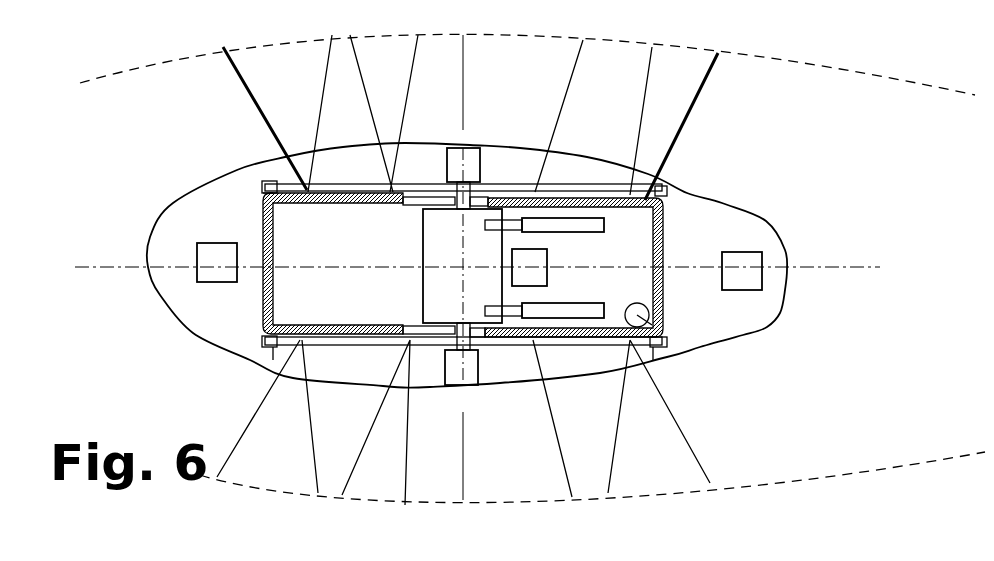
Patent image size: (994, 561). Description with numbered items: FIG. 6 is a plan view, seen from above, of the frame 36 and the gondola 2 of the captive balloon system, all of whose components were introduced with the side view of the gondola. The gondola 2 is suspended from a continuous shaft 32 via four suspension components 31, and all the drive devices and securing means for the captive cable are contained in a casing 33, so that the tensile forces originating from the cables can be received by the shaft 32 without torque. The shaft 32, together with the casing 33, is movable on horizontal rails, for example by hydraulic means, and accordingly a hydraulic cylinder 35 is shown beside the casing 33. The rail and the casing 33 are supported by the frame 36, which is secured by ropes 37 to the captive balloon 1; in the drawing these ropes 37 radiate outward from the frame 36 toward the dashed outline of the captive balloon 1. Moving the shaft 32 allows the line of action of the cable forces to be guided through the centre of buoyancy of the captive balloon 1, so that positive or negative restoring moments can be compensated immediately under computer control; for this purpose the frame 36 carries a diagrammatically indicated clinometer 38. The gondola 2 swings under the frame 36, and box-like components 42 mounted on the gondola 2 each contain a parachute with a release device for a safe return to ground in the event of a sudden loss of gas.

The captive balloon 1 is at (116, 73).
The gondola 2 is at (753, 315).
The suspension components 31 is at (300, 189).
The continuous shaft 32 is at (477, 367).
The casing 33 is at (443, 285).
The hydraulic cylinder 35 is at (600, 227).
The frame 36 is at (665, 248).
The ropes 37 is at (463, 163).
The clinometer 38 is at (662, 324).
The box-like components 42 is at (523, 266).